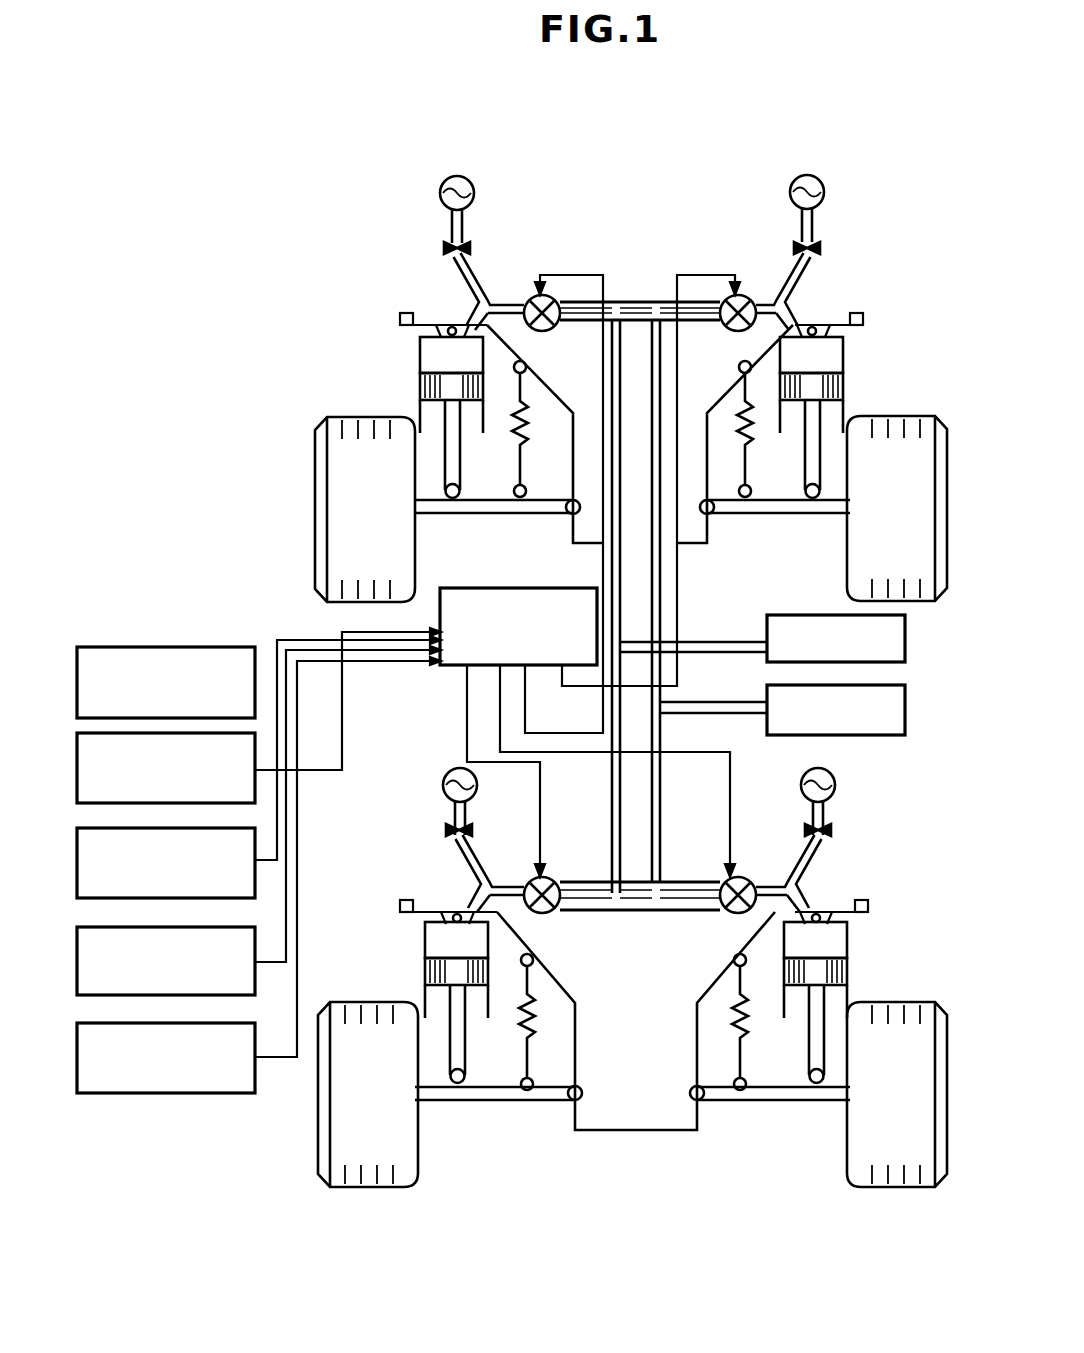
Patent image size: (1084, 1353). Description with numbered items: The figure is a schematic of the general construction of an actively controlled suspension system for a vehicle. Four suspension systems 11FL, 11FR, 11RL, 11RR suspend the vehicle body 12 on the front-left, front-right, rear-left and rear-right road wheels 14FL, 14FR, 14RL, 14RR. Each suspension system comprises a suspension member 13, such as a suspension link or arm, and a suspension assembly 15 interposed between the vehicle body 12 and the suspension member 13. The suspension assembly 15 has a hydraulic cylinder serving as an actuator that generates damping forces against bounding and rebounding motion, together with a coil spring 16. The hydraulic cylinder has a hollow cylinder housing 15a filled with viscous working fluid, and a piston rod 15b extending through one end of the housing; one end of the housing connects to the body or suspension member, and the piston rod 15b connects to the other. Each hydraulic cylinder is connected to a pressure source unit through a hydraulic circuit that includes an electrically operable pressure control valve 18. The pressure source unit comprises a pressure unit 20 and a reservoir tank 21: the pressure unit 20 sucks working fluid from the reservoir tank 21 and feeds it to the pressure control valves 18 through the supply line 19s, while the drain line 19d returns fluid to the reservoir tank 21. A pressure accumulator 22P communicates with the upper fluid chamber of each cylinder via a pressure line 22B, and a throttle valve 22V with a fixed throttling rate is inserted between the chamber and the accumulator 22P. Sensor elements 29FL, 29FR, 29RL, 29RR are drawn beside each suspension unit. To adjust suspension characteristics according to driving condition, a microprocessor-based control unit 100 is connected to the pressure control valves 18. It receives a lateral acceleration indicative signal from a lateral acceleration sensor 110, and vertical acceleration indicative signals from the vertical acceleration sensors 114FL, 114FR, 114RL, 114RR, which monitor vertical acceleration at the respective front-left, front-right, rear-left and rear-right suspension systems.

The rear-right suspension system 11RR is at (396, 348).
The rear-left suspension system 11RL is at (952, 330).
The front-right suspension system 11FR is at (412, 952).
The front-left suspension system 11FL is at (950, 923).
The vehicle body 12 is at (688, 546).
The suspension member 13 is at (475, 509).
The rear-right road wheel 14RR is at (328, 455).
The rear-left road wheel 14RL is at (898, 420).
The front-right road wheel 14FR is at (366, 1190).
The front-left road wheel 14FL is at (876, 1190).
The suspension assembly 15 is at (418, 410).
The cylinder housing 15a is at (428, 327).
The piston rod 15b is at (814, 466).
The coil spring 16 is at (515, 440).
The pressure control valve 18 is at (534, 298).
The supply line 19s is at (612, 758).
The drain line 19d is at (653, 788).
The pressure unit 20 is at (797, 616).
The reservoir tank 21 is at (766, 688).
The pressure accumulator 22P is at (470, 186).
The throttle valve 22V is at (446, 244).
The pressure line 22B is at (462, 282).
The rear right stroke sensor 29RR is at (398, 316).
The rear left stroke sensor 29RL is at (868, 318).
The front right stroke sensor 29FR is at (400, 905).
The front left stroke sensor 29FL is at (868, 903).
The control unit 100 is at (452, 664).
The lateral acceleration sensor 110 is at (240, 630).
The FL vertical acceleration sensor 114FL is at (258, 777).
The FR vertical acceleration sensor 114FR is at (257, 842).
The RL vertical acceleration sensor 114RL is at (258, 942).
The RR vertical acceleration sensor 114RR is at (238, 1094).